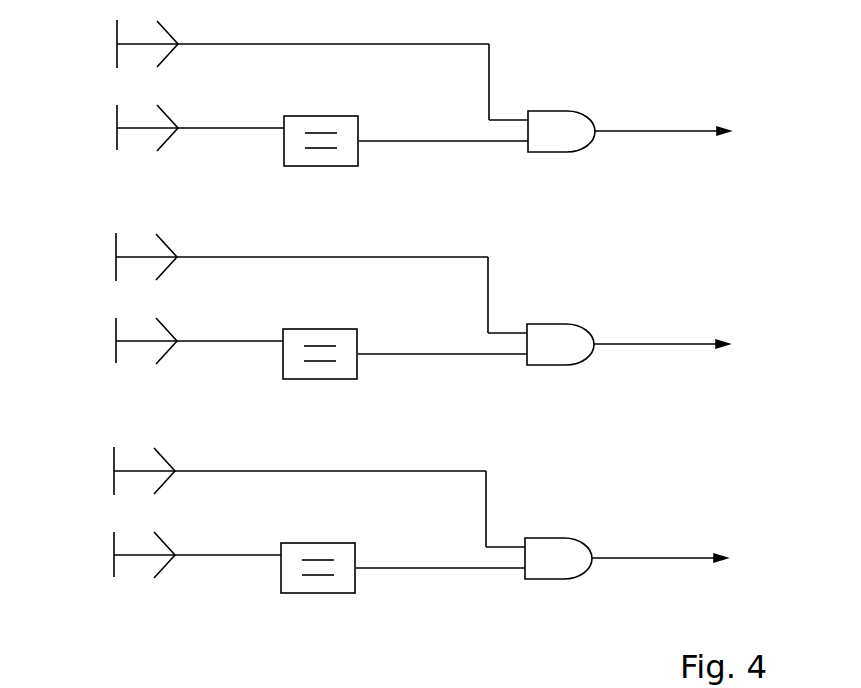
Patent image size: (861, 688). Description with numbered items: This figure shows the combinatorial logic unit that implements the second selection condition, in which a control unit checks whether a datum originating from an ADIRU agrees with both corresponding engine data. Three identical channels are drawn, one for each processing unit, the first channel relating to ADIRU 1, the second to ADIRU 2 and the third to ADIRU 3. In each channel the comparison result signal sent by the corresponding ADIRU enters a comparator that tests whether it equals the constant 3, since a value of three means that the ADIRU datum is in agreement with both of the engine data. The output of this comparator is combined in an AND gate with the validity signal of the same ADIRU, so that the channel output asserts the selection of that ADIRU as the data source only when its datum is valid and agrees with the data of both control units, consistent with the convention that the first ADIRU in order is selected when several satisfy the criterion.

The ADIRU1 selection logic channel 1 is at (434, 101).
The ADIRU2 selection logic channel 2 is at (433, 314).
The comparison result value 3 is at (245, 184).